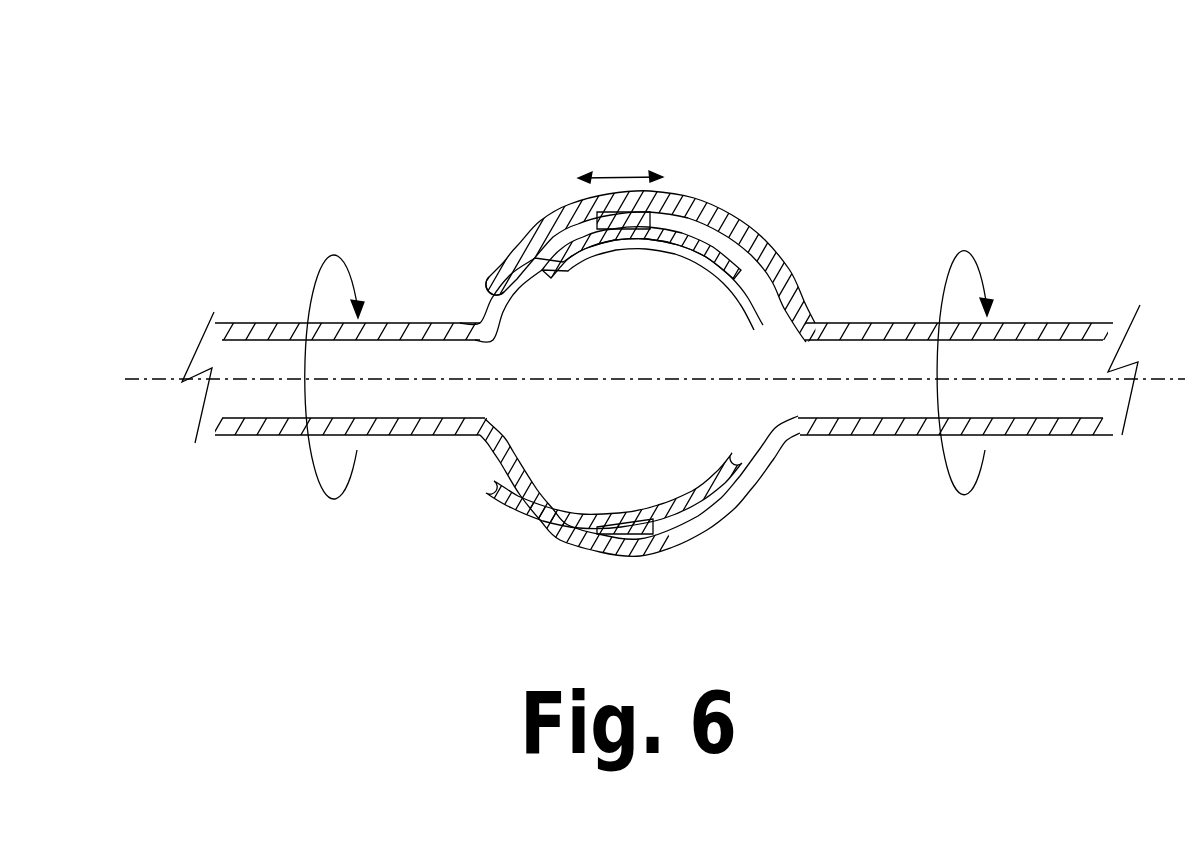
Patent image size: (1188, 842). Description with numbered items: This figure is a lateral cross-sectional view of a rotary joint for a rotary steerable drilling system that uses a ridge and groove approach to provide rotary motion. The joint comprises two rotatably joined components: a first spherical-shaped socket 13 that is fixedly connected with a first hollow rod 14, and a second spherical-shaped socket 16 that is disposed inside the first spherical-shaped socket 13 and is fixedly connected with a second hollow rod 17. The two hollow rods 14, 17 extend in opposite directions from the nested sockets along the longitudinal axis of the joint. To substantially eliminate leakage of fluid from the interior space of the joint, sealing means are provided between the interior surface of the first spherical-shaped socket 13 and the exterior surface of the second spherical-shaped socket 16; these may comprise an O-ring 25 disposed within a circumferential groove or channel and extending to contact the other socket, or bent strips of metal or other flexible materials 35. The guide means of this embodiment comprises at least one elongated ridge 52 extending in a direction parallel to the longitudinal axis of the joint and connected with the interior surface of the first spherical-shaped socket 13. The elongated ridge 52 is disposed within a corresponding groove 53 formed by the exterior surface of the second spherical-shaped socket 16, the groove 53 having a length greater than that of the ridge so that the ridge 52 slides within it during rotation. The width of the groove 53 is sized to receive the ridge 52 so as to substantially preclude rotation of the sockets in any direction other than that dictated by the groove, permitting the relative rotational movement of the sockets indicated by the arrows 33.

The first spherical-shaped socket 13 is at (578, 191).
The first hollow rod 14 is at (1065, 321).
The second spherical-shaped socket 16 is at (519, 488).
The second hollow rod 17 is at (284, 322).
The O-ring 25 is at (478, 262).
The arrows 33 is at (633, 173).
The bent strips of metal or other flexible materials 35 is at (500, 288).
The elongated ridge 52 is at (652, 232).
The groove 53 is at (655, 235).